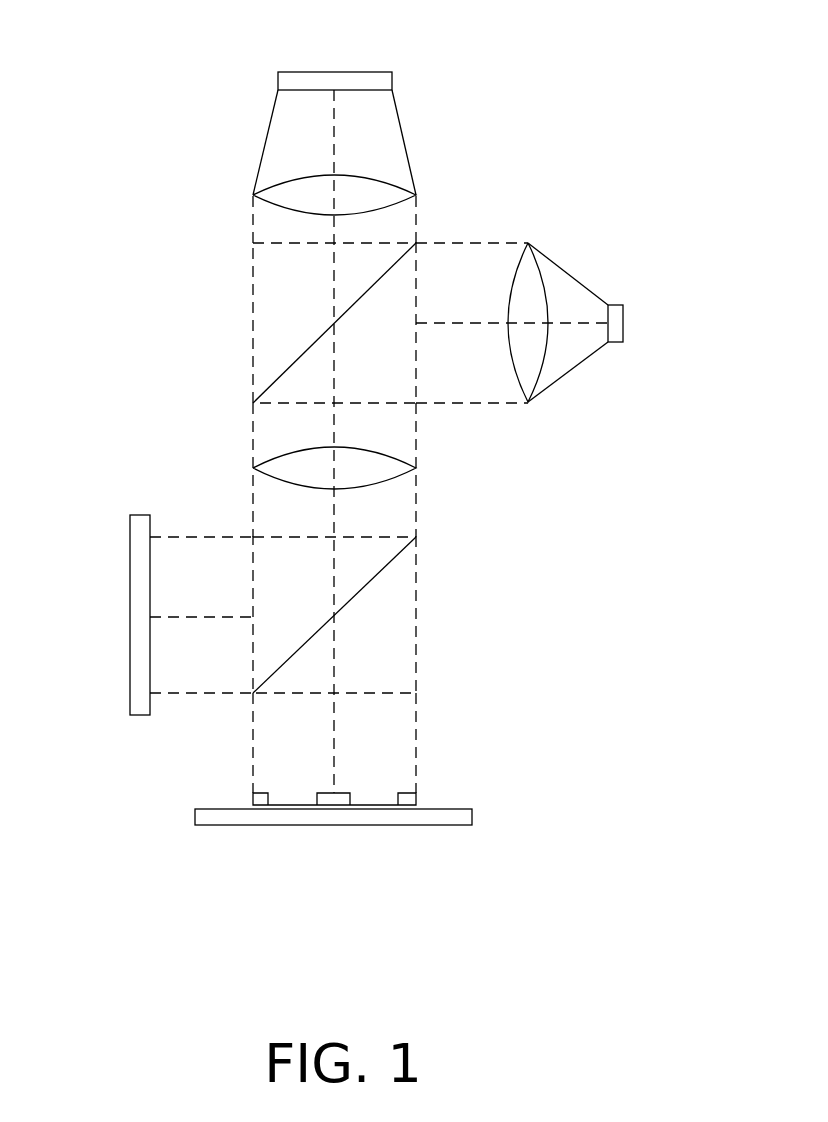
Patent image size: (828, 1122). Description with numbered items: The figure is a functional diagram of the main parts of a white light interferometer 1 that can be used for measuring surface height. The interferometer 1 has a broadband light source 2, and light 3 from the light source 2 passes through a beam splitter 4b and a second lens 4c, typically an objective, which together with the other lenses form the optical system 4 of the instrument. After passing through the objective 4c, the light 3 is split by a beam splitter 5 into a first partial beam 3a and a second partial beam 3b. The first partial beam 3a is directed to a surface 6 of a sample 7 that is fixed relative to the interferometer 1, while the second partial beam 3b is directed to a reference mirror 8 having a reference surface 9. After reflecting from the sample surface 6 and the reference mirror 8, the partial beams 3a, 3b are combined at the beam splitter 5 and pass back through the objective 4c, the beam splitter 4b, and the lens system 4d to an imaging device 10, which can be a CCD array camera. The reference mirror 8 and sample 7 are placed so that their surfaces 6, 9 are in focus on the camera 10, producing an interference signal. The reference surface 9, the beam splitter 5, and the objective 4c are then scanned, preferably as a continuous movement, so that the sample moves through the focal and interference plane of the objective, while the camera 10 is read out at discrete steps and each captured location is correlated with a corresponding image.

The white light interferometer 1 is at (546, 181).
The broadband light source 2 is at (617, 335).
The light 3 is at (351, 299).
The first partial beam 3a is at (363, 615).
The second partial beam 3b is at (193, 650).
The optical system 4 is at (593, 415).
The beam splitter 4b is at (270, 383).
The second lens 4c is at (415, 468).
The lens system 4d is at (387, 195).
The beam splitter 5 is at (390, 563).
The surface 6 is at (370, 797).
The sample 7 is at (407, 805).
The reference mirror 8 is at (135, 665).
The reference surface 9 is at (152, 577).
The imaging device 10 is at (373, 82).